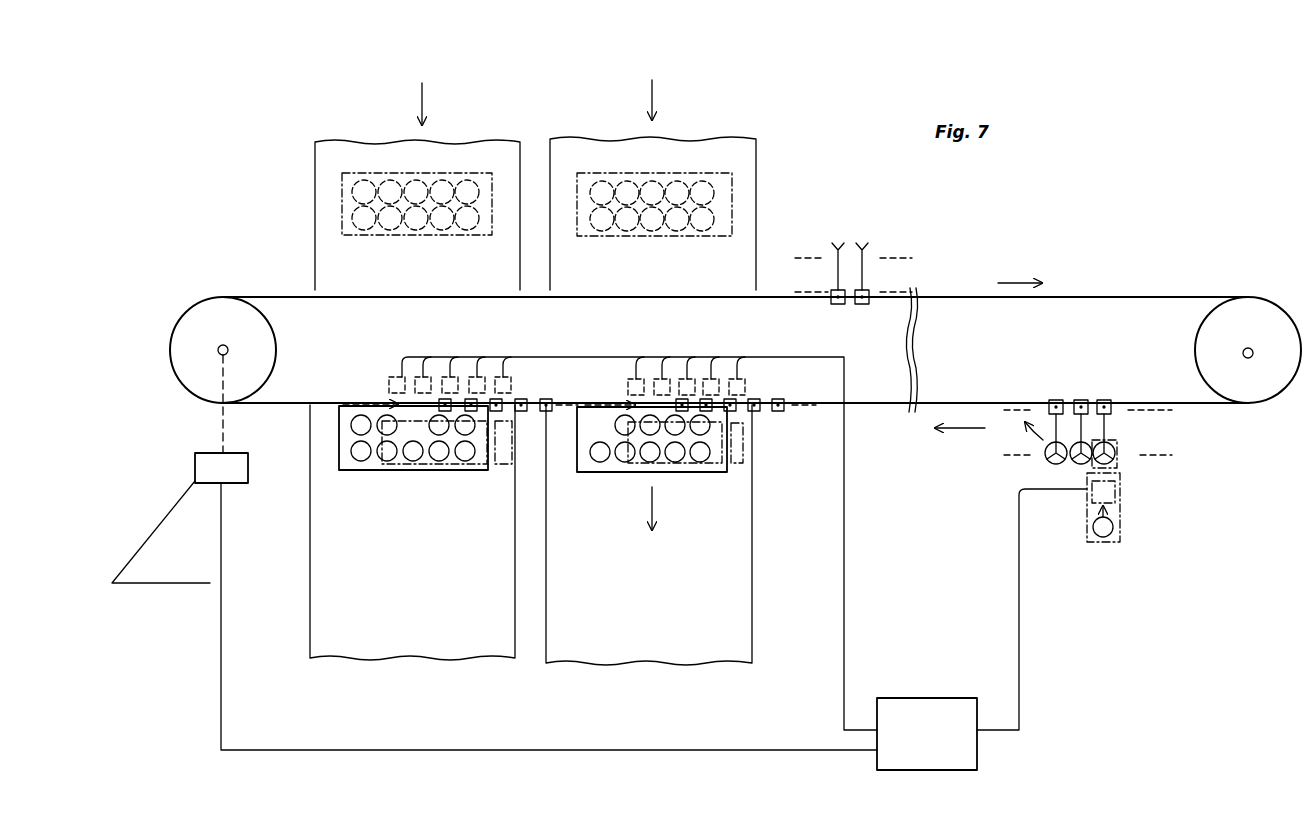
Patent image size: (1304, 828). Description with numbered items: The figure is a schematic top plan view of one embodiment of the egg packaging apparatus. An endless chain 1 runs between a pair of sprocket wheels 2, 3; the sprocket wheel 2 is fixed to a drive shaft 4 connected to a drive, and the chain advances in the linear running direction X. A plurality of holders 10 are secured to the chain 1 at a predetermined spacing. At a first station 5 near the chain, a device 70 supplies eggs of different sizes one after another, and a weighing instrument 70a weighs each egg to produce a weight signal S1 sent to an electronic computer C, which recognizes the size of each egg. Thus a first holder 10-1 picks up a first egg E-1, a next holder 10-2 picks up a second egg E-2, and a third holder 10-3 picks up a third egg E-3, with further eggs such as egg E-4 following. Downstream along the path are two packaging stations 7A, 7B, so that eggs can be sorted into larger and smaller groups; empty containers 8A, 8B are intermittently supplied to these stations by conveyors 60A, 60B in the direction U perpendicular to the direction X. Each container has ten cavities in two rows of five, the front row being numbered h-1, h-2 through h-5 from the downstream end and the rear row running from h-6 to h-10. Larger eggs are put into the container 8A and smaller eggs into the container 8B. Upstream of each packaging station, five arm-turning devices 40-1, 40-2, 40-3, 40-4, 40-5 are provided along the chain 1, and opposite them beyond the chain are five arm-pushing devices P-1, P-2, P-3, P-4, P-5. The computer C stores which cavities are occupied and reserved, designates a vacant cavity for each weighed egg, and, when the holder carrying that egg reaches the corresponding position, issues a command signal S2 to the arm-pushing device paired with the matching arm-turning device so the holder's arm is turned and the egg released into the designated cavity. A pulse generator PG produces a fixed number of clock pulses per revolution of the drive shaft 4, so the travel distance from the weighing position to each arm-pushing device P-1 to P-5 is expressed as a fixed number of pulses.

The endless chain 1 is at (1125, 297).
The sprocket wheel 2 is at (208, 390).
The sprocket wheel 3 is at (1266, 310).
The drive shaft 4 is at (220, 350).
The first station 5 is at (1117, 440).
The holders 10 is at (838, 244).
The first holder 10-1 is at (1056, 398).
The second holder 10-2 is at (1081, 398).
The third holder 10-3 is at (1104, 398).
The conveyor 60A is at (471, 146).
The conveyor 60B is at (720, 142).
The container 8A is at (342, 210).
The container 8B is at (732, 181).
The packaging station 7A is at (336, 444).
The packaging station 7B is at (712, 483).
The arm-turning device 40-1 is at (394, 464).
The arm-turning device 40-2 is at (420, 463).
The arm-turning device 40-3 is at (439, 460).
The arm-turning device 40-4 is at (470, 465).
The arm-turning device 40-5 is at (505, 480).
The cavity h-1 is at (366, 462).
The cavity h-2 is at (389, 458).
The cavity h-5 is at (468, 465).
The cavity h-6 is at (352, 428).
The cavity h-10 is at (530, 376).
The egg supplying device 70 is at (1120, 535).
The weighing instrument 70a is at (1115, 495).
The first egg E-1 is at (1045, 455).
The second egg E-2 is at (1076, 464).
The third egg E-3 is at (1117, 460).
The egg E-4 is at (1103, 537).
The arm-pushing device P-1 is at (392, 376).
The arm-pushing device P-2 is at (428, 376).
The arm-pushing device P-3 is at (454, 376).
The arm-pushing device P-4 is at (480, 377).
The arm-pushing device P-5 is at (510, 378).
The weight signal S1 is at (1019, 620).
The command signal S2 is at (843, 615).
The electronic computer C is at (931, 698).
The pulse generator PG is at (195, 474).
The direction U is at (424, 88).
The direction X is at (1014, 282).